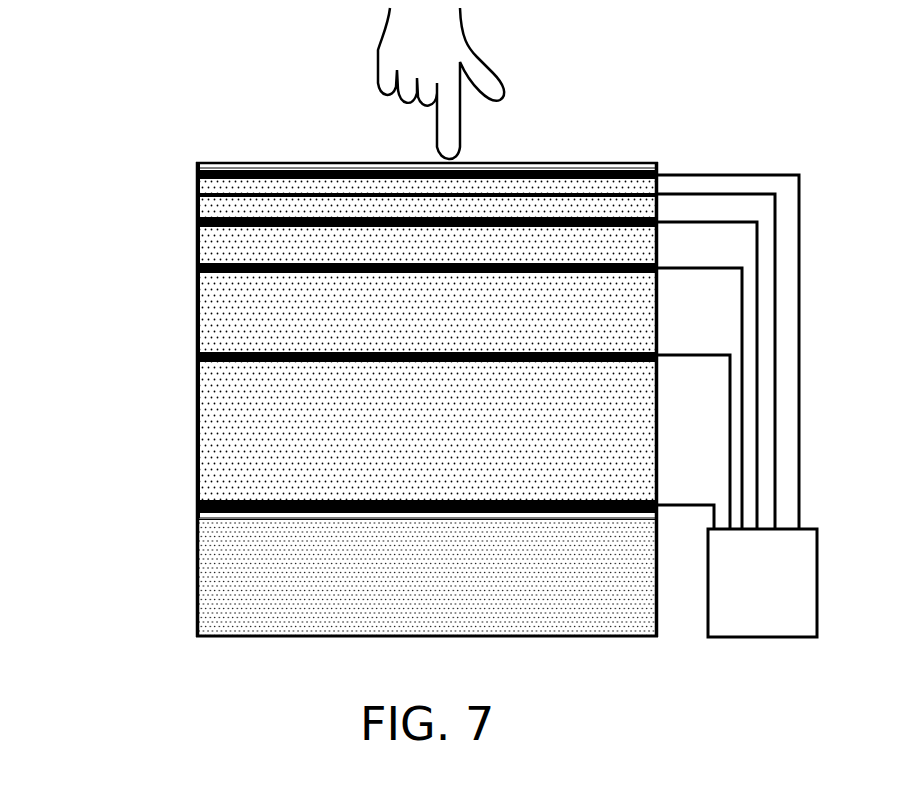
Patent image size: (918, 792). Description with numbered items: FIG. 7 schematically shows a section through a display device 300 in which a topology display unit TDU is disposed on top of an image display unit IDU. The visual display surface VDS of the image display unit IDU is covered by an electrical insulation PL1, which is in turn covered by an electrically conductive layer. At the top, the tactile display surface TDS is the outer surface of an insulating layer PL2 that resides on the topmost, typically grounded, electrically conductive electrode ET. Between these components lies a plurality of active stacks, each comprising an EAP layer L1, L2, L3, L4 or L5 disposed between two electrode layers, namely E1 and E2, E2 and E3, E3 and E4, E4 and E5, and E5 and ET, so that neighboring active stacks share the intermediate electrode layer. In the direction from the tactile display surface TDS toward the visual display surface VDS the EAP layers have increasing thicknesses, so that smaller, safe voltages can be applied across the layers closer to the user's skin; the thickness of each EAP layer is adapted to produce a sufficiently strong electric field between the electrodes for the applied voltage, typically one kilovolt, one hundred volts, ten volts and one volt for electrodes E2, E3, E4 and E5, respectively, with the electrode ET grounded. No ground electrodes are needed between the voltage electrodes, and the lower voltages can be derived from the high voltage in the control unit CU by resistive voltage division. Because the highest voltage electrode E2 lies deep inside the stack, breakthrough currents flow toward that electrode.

The display device 300 is at (444, 675).
The tactile display surface TDS is at (331, 162).
The insulating layer PL2 is at (196, 164).
The electrically conductive electrode ET is at (497, 337).
The EAP layer L5 is at (196, 184).
The electrode layer E5 is at (485, 361).
The EAP layer L4 is at (196, 207).
The electrode layer E4 is at (476, 373).
The EAP layer L3 is at (196, 245).
The electrode layer E3 is at (469, 396).
The EAP layer L2 is at (196, 305).
The electrode layer E2 is at (463, 440).
The EAP layer L1 is at (196, 420).
The electrode layer E1 is at (455, 500).
The electrical insulation PL1 is at (196, 516).
The visual display surface VDS is at (522, 532).
The image display unit IDU is at (196, 578).
The topology display unit TDU is at (100, 132).
The control unit CU is at (746, 591).